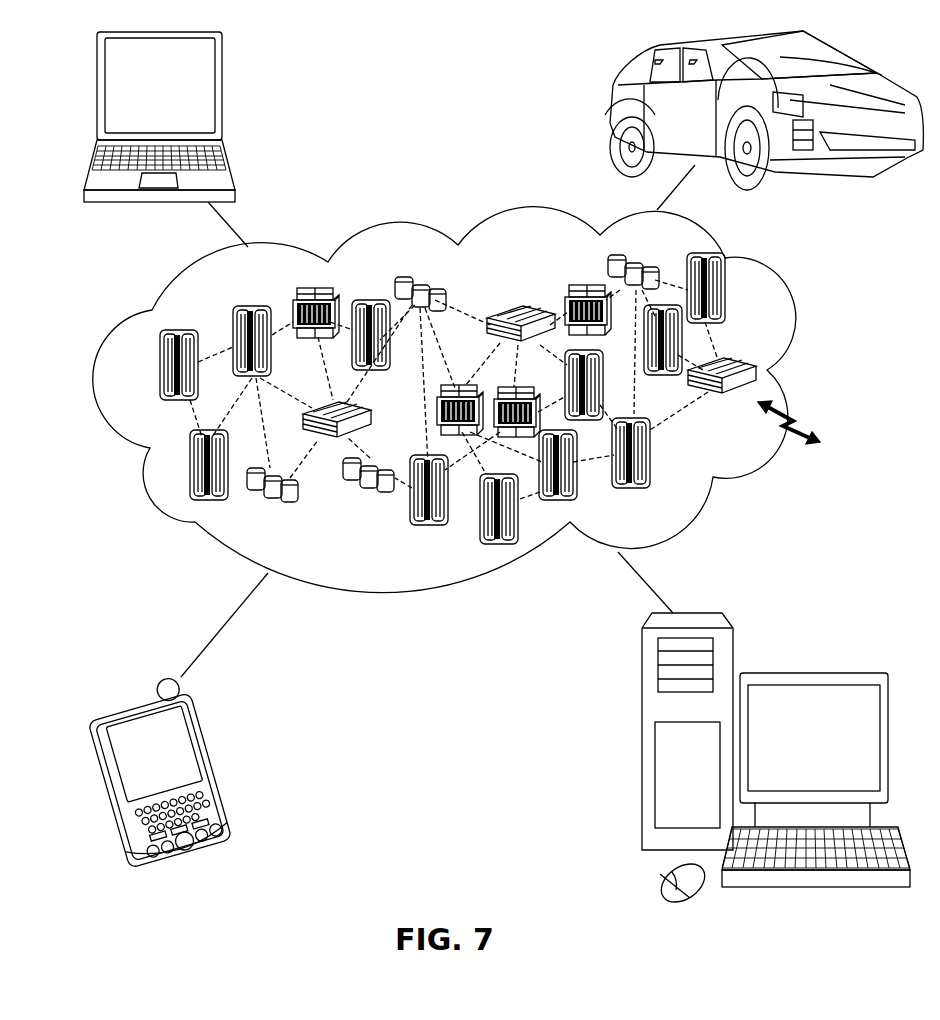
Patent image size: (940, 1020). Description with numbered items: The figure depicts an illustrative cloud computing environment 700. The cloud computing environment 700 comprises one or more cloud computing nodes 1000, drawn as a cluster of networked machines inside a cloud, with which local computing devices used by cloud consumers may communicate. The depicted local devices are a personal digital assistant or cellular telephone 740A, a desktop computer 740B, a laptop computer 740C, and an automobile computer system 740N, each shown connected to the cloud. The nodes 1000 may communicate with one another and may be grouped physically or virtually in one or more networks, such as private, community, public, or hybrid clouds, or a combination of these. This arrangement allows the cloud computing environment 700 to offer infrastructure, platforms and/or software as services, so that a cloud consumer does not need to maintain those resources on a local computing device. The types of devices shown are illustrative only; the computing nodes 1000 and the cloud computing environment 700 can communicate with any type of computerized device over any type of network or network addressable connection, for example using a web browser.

The cloud computing environment 700 is at (808, 378).
The cloud computing nodes 1000 is at (818, 427).
The personal digital assistant or cellular telephone 740A is at (214, 765).
The desktop computer 740B is at (812, 673).
The laptop computer 740C is at (223, 95).
The automobile computer system 740N is at (612, 100).